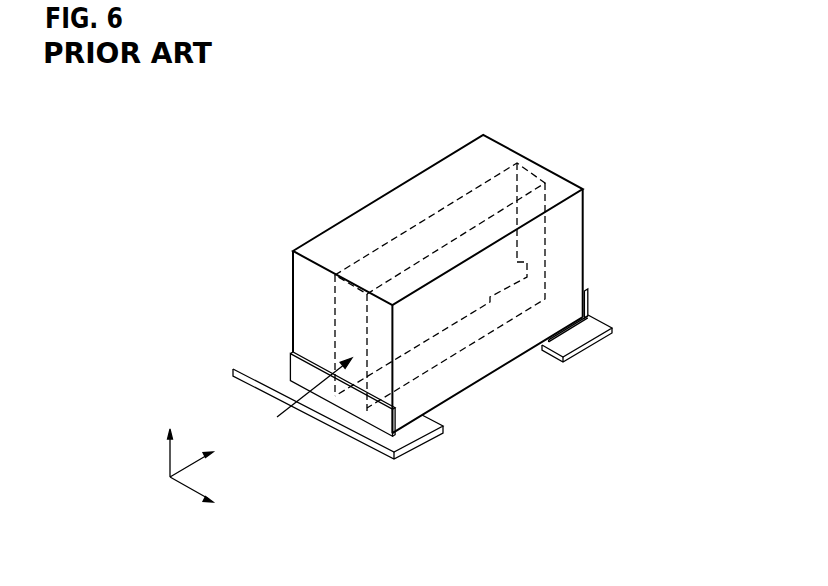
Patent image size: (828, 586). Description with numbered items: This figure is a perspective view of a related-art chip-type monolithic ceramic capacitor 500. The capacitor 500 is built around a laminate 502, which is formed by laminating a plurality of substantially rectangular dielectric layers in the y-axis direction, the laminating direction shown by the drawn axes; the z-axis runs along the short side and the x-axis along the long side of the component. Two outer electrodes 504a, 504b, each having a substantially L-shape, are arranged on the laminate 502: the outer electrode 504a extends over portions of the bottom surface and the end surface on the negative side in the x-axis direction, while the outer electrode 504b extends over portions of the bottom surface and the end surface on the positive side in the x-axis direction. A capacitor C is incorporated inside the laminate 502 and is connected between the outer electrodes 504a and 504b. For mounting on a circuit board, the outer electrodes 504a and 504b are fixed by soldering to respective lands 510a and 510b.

The monolithic ceramic capacitor 500 is at (321, 108).
The laminate 502 is at (423, 188).
The outer electrode 504a is at (367, 421).
The outer electrode 504b is at (590, 305).
The land 510a is at (423, 440).
The land 510b is at (588, 342).
The capacitor C is at (305, 397).